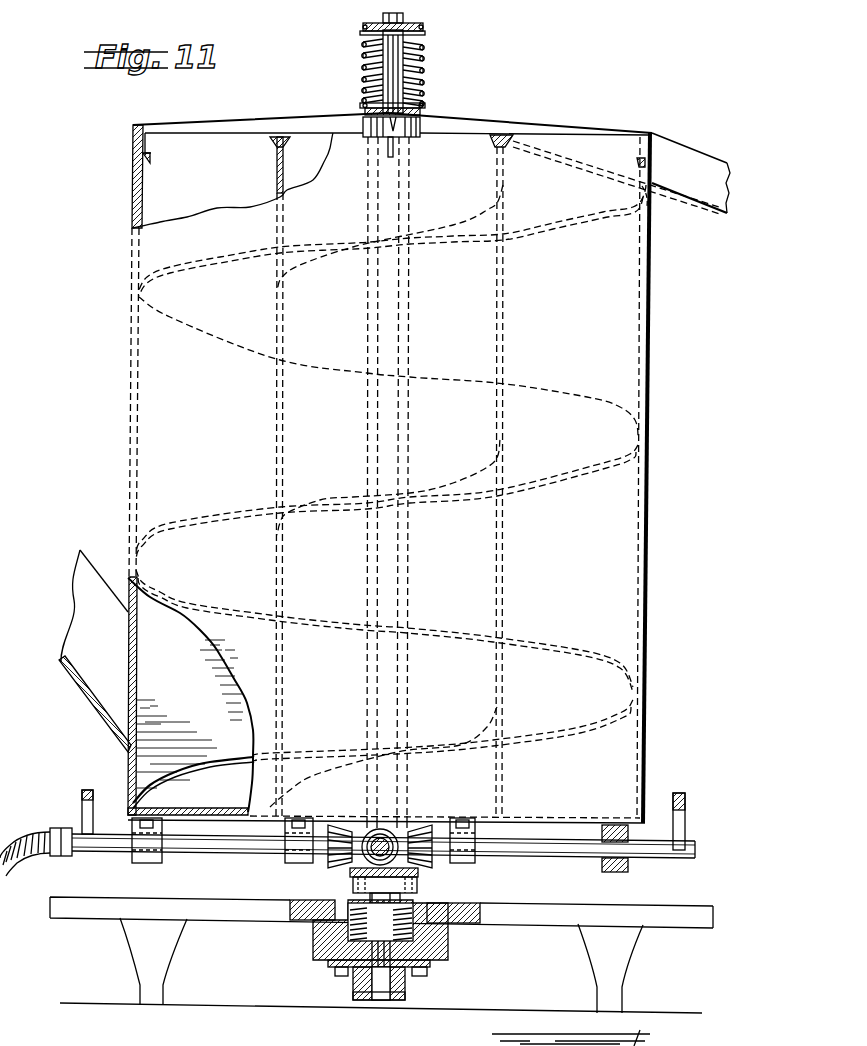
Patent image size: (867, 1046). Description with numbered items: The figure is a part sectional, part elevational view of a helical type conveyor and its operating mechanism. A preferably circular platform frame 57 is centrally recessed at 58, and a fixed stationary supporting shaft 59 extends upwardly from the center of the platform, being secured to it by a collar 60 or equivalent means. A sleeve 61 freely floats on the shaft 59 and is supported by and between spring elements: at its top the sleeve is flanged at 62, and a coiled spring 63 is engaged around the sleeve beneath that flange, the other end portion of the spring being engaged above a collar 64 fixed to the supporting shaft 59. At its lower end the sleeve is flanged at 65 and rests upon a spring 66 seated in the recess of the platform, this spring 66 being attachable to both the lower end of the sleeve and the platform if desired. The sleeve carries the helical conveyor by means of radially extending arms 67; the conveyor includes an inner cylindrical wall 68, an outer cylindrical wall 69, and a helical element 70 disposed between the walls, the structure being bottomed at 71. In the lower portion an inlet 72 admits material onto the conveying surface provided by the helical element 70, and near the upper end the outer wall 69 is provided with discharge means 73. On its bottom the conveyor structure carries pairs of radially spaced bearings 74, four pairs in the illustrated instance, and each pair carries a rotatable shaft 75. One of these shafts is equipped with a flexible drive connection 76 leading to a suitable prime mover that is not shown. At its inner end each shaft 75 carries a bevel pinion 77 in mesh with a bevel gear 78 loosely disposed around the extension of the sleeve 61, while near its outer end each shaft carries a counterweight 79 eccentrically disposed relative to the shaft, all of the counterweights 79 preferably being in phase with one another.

The platform frame 57 is at (220, 908).
The central recess 58 is at (428, 940).
The fixed stationary supporting shaft 59 is at (393, 75).
The collar 60 is at (397, 1000).
The sleeve 61 is at (407, 323).
The upper flange of sleeve 62 is at (425, 108).
The coiled spring 63 is at (362, 70).
The collar fixed to supporting shaft 64 is at (425, 32).
The lower flange of sleeve 65 is at (408, 895).
The spring 66 is at (352, 927).
The radially extending arms 67 is at (225, 131).
The inner cylindrical wall 68 is at (278, 172).
The outer cylindrical wall 69 is at (143, 200).
The helical element 70 is at (583, 430).
The bottom 71 is at (190, 808).
The inlet 72 is at (128, 670).
The discharge means 73 is at (652, 162).
The radially spaced bearings 74 is at (600, 867).
The rotatable shaft 75 is at (357, 825).
The flexible drive connection 76 is at (17, 866).
The bevel pinion 77 is at (418, 840).
The bevel gear 78 is at (352, 872).
The counterweight 79 is at (88, 785).